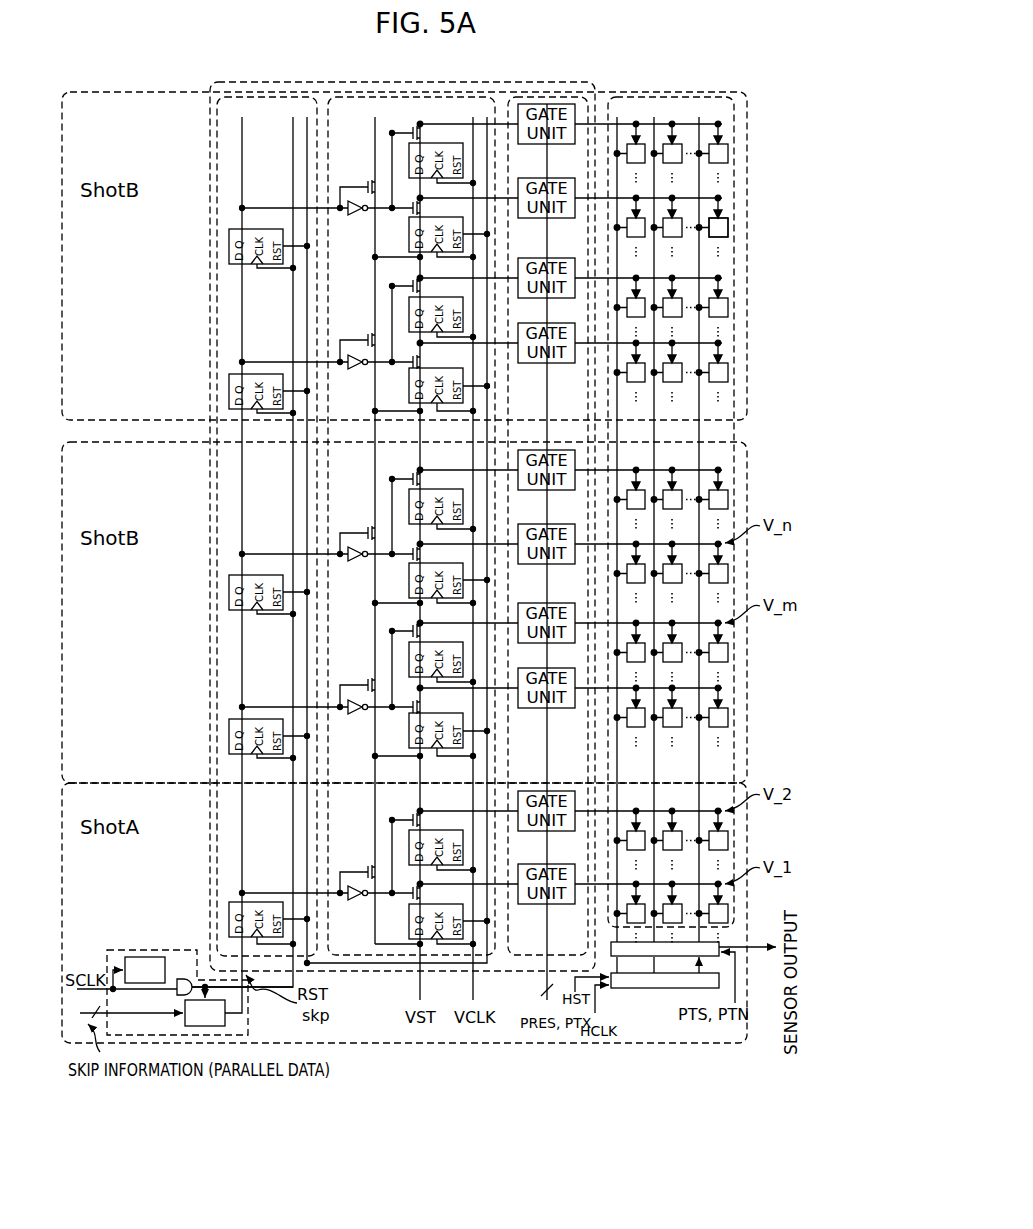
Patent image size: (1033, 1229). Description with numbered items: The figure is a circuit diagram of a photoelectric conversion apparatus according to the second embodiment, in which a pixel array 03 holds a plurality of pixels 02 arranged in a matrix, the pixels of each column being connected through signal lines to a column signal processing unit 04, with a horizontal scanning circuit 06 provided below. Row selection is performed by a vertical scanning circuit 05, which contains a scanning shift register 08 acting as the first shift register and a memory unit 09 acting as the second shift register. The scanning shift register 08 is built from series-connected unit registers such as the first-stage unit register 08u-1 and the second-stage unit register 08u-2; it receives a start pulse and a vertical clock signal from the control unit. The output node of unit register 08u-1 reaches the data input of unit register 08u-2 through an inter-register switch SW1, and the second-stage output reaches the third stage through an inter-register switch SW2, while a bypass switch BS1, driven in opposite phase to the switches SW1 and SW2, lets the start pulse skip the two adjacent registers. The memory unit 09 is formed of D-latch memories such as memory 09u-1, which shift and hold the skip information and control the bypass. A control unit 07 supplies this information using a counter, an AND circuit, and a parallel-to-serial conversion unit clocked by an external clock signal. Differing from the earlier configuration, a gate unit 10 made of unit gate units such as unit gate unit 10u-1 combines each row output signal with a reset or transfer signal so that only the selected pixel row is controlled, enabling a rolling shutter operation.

The pixel 02 is at (732, 229).
The pixel array 03 is at (700, 494).
The column signal processing unit 04 is at (725, 943).
The vertical scanning circuit 05 is at (498, 83).
The horizontal scanning circuit 06 is at (657, 990).
The control unit 07 is at (120, 947).
The scanning shift register 08 is at (317, 524).
The memory unit 09 is at (270, 95).
The gate unit 10 is at (543, 524).
The memory 09u-1 is at (226, 911).
The unit register in the first stage 08u-1 is at (404, 934).
The unit register in the second stage 08u-2 is at (400, 842).
The unit gate unit 10u-1 is at (536, 908).
The inter-register switch SW1 is at (403, 897).
The inter-register switch SW2 is at (403, 816).
The bypass switch BS1 is at (365, 868).